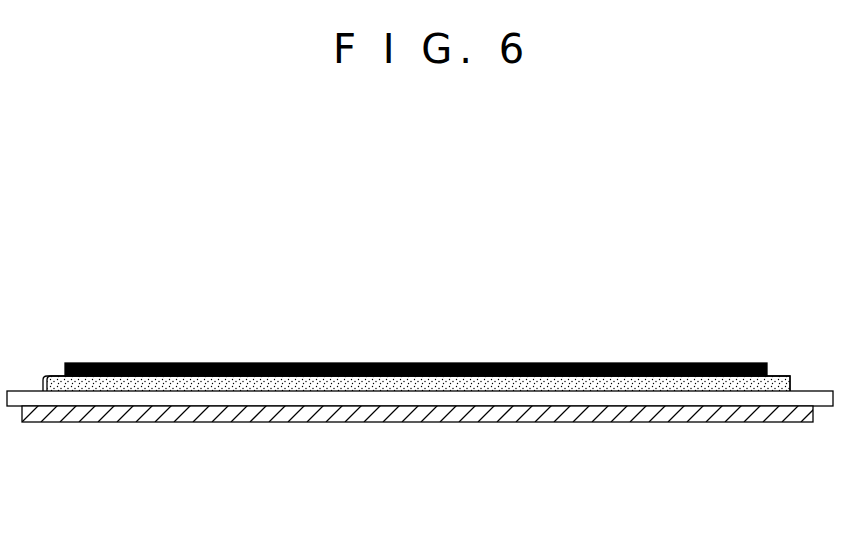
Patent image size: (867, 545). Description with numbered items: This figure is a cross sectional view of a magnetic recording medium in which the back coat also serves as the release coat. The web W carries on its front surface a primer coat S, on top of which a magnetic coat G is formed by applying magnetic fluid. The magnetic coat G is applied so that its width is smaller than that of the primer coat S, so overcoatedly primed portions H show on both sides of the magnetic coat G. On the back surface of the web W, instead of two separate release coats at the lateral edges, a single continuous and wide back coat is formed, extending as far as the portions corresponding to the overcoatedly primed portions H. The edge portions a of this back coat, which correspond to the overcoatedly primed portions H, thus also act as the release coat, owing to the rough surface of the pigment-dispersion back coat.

The overcoatedly primed portion H is at (55, 374).
The magnetic coat G is at (682, 363).
The primer coat S is at (340, 377).
The web W is at (557, 398).
The edge portions of the back coat a is at (38, 417).